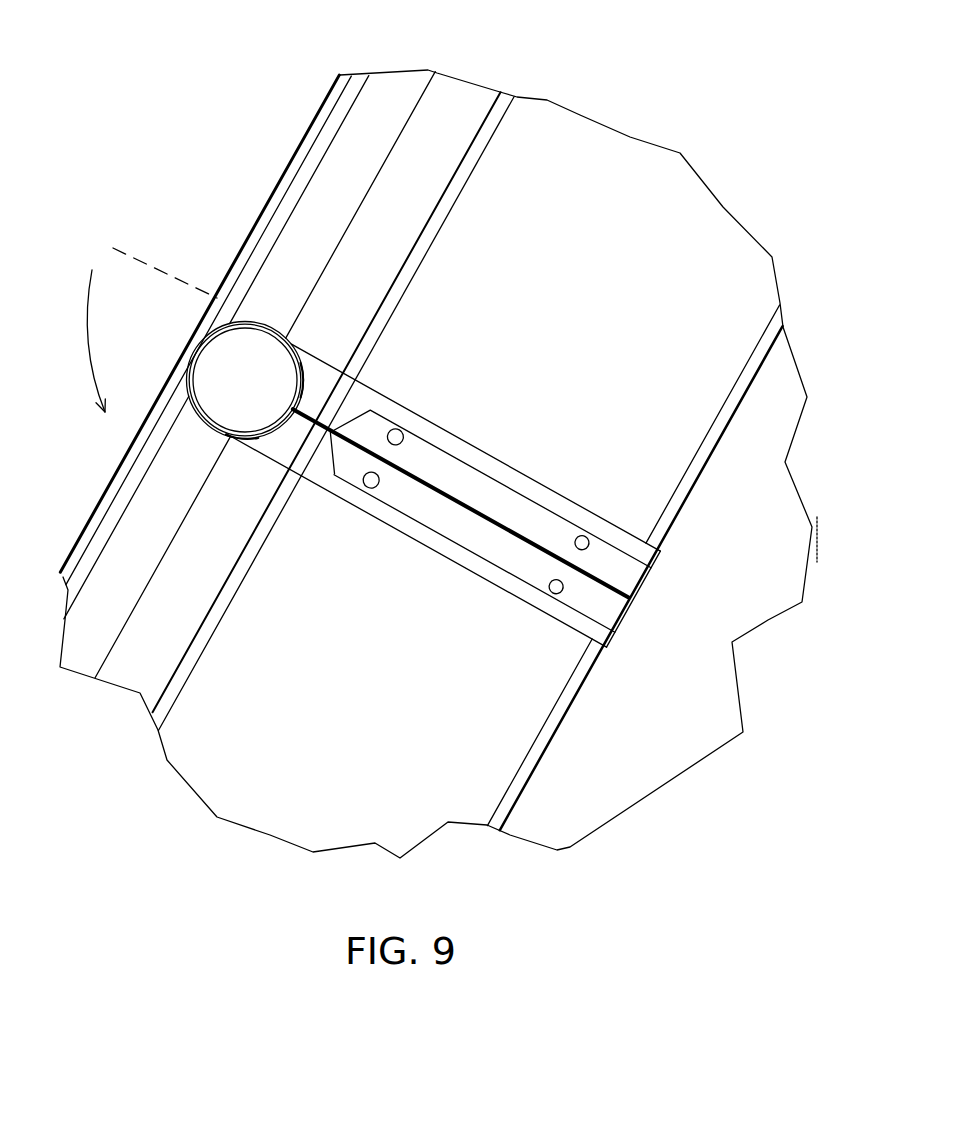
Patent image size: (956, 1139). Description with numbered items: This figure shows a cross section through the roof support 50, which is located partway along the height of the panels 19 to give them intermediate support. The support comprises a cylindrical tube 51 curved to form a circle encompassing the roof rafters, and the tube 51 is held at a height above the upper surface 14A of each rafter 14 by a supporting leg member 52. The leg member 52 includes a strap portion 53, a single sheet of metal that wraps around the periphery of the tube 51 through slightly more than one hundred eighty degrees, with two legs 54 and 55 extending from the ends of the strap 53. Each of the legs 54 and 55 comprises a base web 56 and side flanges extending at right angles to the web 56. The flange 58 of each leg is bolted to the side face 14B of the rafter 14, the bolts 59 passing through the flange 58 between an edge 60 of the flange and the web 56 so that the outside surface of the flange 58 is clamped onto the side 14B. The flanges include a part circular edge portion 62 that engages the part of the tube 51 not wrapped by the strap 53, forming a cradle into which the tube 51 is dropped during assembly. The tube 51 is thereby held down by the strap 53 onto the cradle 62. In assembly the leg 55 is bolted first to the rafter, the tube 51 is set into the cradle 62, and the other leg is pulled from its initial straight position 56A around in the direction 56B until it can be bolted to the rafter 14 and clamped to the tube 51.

The rafter 14 is at (445, 737).
The upper surface of the rafter 14A is at (173, 690).
The side face of the rafter 14B is at (535, 750).
The panels 19 is at (277, 197).
The roof support 50 is at (180, 303).
The cylindrical tube 51 is at (190, 370).
The supporting leg member 52 is at (450, 390).
The strap portion 53 is at (253, 320).
The leg 54 is at (413, 533).
The leg 55 is at (503, 460).
The base web 56 is at (470, 464).
The initial straight position 56A is at (120, 248).
The direction of pulling 56B is at (87, 322).
The side flange 58 is at (510, 553).
The bolts 59 is at (573, 535).
The edge of the flange 60 is at (465, 470).
The part circular edge portion 62 is at (298, 372).